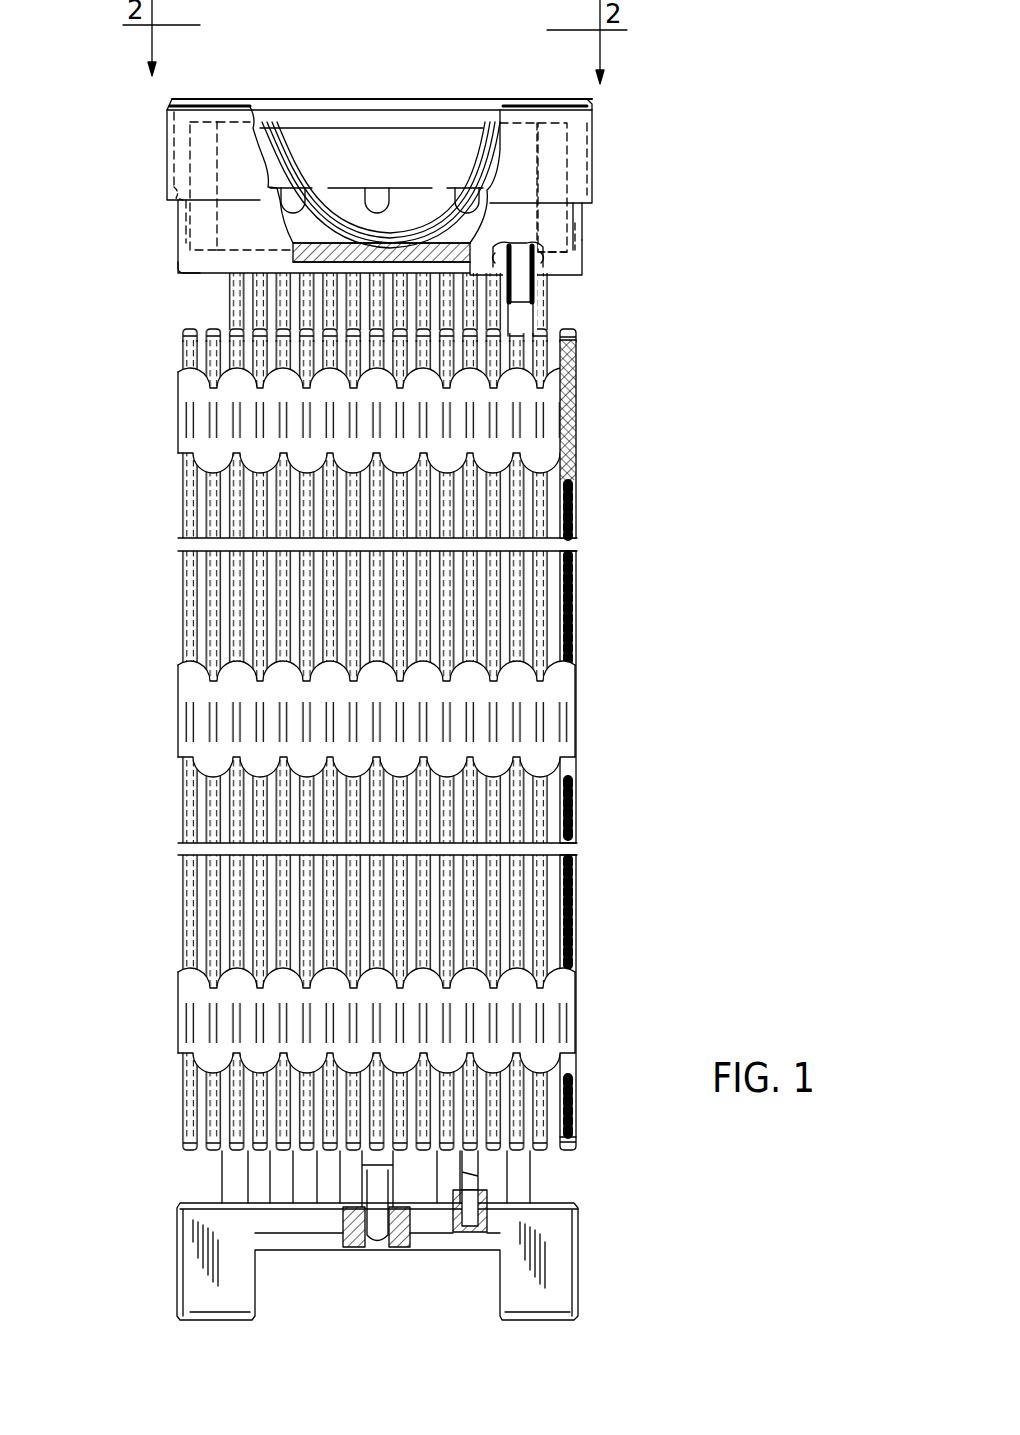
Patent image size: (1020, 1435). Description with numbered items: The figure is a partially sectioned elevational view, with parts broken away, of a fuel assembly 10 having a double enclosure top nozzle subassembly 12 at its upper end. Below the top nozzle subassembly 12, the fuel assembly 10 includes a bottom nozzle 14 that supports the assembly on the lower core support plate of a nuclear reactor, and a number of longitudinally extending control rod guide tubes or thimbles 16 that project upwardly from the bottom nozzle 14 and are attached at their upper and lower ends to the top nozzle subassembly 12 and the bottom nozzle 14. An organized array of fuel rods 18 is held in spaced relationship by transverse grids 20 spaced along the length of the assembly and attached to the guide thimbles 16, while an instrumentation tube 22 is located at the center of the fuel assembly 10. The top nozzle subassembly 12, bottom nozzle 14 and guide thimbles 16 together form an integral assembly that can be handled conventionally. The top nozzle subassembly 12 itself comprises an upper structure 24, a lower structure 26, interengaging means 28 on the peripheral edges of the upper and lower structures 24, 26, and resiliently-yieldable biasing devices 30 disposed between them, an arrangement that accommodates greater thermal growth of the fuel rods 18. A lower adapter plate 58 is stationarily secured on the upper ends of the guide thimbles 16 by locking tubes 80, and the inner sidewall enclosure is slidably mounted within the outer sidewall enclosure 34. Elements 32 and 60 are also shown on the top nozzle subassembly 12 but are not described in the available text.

The fuel assembly 10 is at (626, 107).
The double enclosure top nozzle subassembly 12 is at (604, 191).
The bottom nozzle 14 is at (578, 1250).
The control rod guide tubes or thimbles 16 is at (228, 303).
The fuel rods 18 is at (580, 498).
The transverse grids 20 is at (180, 401).
The instrumentation tube 22 is at (392, 1250).
The upper structure 24 is at (168, 146).
The lower structure 26 is at (588, 252).
The interengaging means 28 is at (168, 200).
The resiliently-yieldable biasing devices 30 is at (321, 160).
The cover plate 32 is at (204, 98).
The outer sidewall enclosure 34 is at (595, 142).
The lower adapter plate 58 is at (190, 273).
The end wall 60 is at (588, 220).
The locking tubes 80 is at (537, 286).